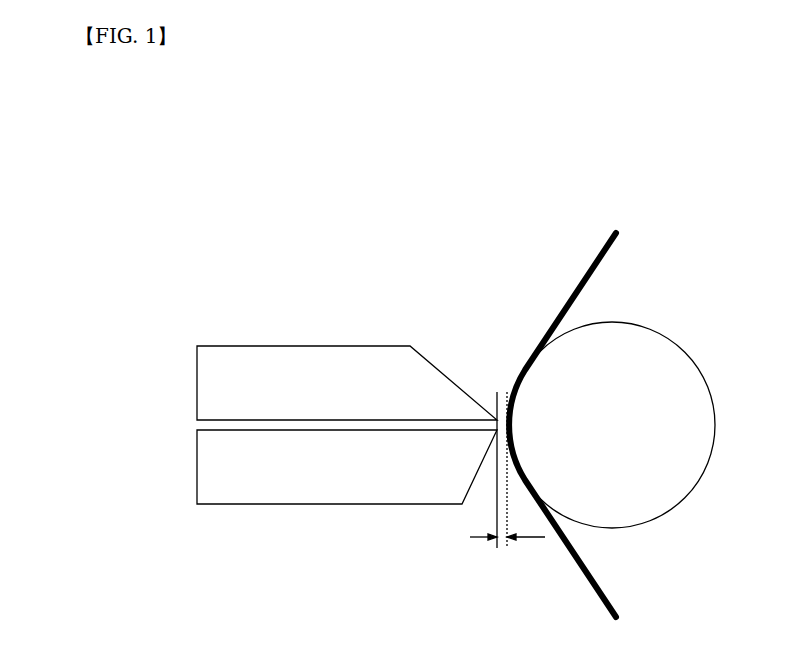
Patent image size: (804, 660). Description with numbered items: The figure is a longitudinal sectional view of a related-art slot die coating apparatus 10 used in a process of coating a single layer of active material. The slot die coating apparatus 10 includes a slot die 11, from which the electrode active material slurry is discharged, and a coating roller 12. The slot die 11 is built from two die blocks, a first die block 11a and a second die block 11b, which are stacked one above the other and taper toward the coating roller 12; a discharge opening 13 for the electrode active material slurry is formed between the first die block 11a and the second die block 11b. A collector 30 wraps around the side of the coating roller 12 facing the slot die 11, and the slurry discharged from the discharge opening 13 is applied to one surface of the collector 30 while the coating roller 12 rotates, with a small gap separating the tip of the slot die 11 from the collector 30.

The slot die coating apparatus 10 is at (416, 124).
The slot die 11 is at (138, 368).
The first die block 11a is at (197, 385).
The second die block 11b is at (197, 465).
The coating roller 12 is at (687, 362).
The discharge opening 13 is at (463, 428).
The collector 30 is at (600, 252).